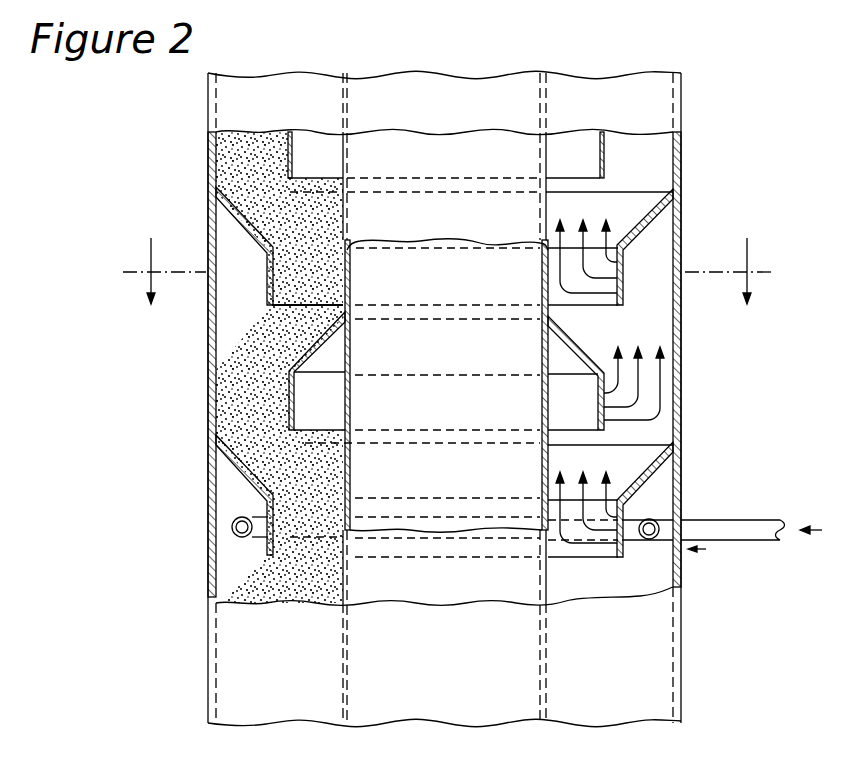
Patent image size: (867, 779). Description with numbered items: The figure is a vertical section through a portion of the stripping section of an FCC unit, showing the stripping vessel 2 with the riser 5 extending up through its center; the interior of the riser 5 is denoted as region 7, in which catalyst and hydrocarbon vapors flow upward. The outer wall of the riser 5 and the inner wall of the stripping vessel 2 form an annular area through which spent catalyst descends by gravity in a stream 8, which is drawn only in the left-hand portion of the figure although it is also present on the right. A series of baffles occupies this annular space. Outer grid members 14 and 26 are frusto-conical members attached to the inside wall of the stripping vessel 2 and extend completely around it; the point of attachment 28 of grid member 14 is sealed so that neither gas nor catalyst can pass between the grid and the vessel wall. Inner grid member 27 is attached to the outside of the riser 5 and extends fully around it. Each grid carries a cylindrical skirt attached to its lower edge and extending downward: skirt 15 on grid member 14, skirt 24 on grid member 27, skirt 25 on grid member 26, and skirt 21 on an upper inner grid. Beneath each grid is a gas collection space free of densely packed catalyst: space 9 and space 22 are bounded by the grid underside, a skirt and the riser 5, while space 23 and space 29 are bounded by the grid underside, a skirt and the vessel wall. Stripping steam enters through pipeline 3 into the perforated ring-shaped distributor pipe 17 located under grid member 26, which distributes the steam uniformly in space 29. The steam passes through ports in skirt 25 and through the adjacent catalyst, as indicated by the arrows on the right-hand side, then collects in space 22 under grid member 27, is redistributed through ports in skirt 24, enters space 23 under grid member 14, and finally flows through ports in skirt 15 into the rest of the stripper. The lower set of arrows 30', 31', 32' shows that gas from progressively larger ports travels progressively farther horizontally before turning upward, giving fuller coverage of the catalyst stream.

The stripping vessel 2 is at (203, 149).
The pipeline 3 is at (742, 520).
The riser 5 is at (350, 403).
The interior of riser 7 is at (448, 289).
The catalyst stream 8 is at (312, 233).
The gas collection space 9 is at (323, 164).
The grid member 14 is at (260, 242).
The skirt 15 is at (268, 290).
The distributor pipe 17 is at (258, 517).
The skirt 21 is at (605, 153).
The gas collection space 22 is at (320, 358).
The gas collection space 23 is at (664, 275).
The skirt 24 is at (600, 400).
The skirt 25 is at (268, 545).
The grid member 26 is at (240, 468).
The grid member 27 is at (572, 340).
The point of attachment 28 is at (683, 193).
The gas collection space 29 is at (665, 505).
The arrow 30' is at (627, 483).
The arrow 31' is at (588, 489).
The arrow 32' is at (550, 501).